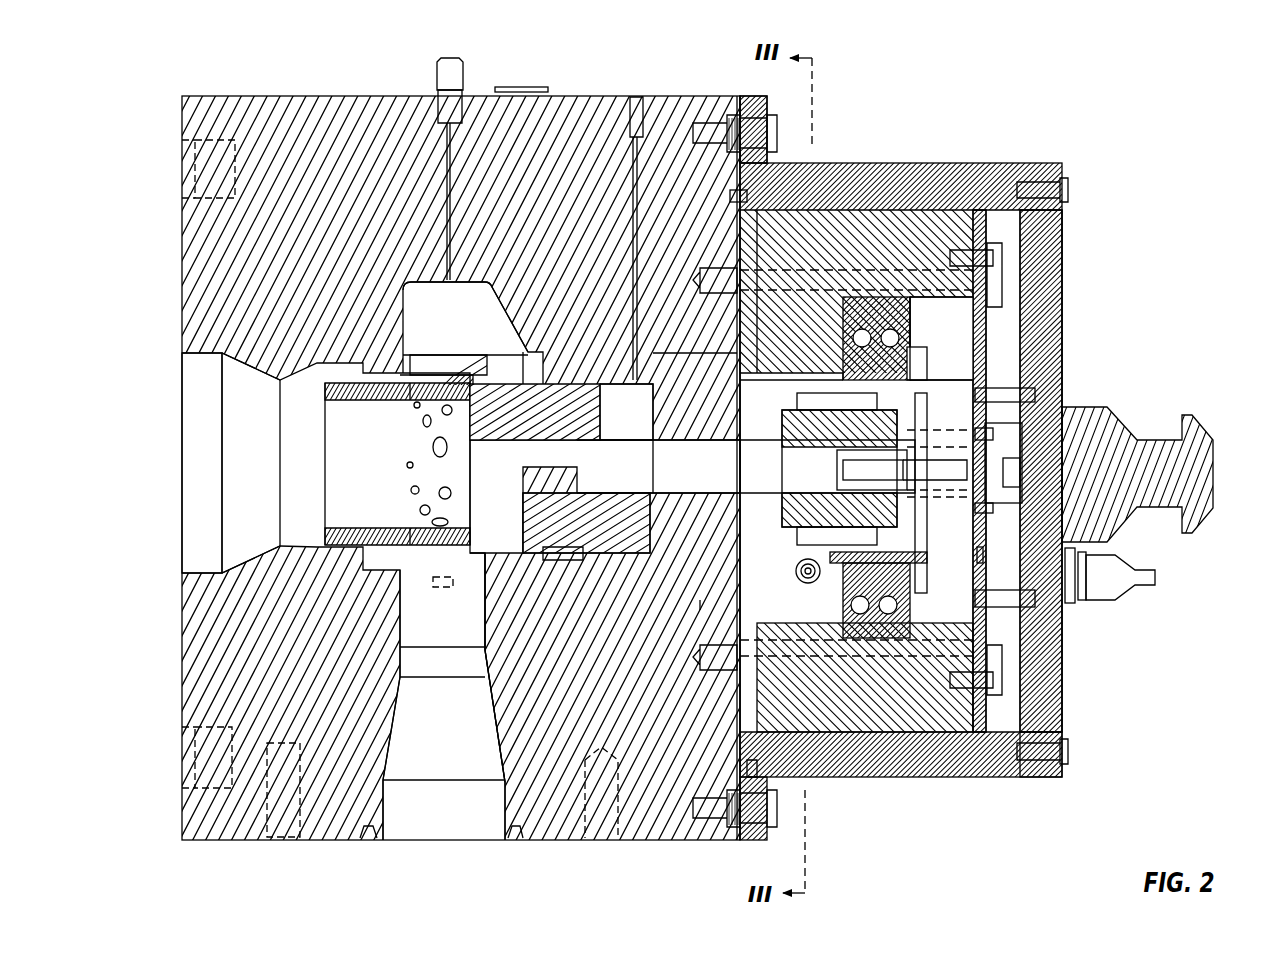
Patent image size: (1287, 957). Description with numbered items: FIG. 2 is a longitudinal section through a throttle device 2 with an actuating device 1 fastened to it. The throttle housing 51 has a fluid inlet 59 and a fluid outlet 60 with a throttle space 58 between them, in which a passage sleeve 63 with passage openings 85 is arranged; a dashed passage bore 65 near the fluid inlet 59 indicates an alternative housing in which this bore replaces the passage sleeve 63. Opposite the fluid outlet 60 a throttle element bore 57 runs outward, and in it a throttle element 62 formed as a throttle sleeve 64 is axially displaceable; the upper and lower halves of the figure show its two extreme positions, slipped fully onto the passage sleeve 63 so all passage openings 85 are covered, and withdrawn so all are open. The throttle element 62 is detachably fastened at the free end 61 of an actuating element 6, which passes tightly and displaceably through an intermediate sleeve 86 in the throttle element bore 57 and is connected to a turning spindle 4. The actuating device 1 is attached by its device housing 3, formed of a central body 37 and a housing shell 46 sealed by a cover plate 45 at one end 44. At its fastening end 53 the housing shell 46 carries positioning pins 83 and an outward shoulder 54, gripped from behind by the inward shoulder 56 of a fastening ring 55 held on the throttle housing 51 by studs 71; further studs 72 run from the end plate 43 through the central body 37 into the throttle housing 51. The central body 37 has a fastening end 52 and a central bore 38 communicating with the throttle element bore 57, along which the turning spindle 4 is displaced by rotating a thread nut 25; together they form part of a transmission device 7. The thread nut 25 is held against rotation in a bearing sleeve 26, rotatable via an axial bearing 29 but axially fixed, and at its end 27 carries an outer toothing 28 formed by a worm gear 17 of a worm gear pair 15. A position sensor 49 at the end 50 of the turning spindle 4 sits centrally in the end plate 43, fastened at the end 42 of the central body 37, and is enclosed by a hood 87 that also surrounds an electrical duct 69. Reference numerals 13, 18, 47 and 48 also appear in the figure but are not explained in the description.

The actuating device 1 is at (1095, 134).
The throttle device 2 is at (528, 87).
The device housing 3 is at (980, 162).
The turning spindle 4 is at (805, 735).
The actuating element 6 is at (610, 453).
The transmission device 7 is at (880, 640).
The injection nozzle 13 is at (1100, 595).
The worm gear pair 15 is at (839, 618).
The worm gear 17 is at (808, 380).
The coupling element 18 is at (835, 650).
The thread nut 25 is at (945, 650).
The bearing sleeve 26 is at (1003, 178).
The end of the thread nut 27 is at (915, 235).
The outer toothing 28 is at (878, 258).
The axial bearing 29 is at (920, 640).
The central body 37 is at (940, 240).
The central bore 38 is at (662, 600).
The end of the central body 42 is at (980, 230).
The end plate 43 is at (1000, 335).
The end of the housing shell 44 is at (1068, 190).
The cover plate 45 is at (1040, 260).
The housing shell 46 is at (867, 182).
The rear plate 47 is at (1068, 740).
The drive connection 48 is at (1192, 428).
The position sensor 49 is at (1030, 440).
The end of the turning spindle 50 is at (975, 650).
The throttle housing 51 is at (288, 100).
The fastening end of the central body 52 is at (733, 247).
The fastening end of the housing shell 53 is at (750, 762).
The shoulder 54 is at (740, 610).
The fastening ring 55 is at (770, 108).
The shoulder of the fastening ring 56 is at (740, 700).
The throttle element bore 57 is at (538, 383).
The throttle space 58 is at (423, 300).
The fluid inlet 59 is at (413, 808).
The fluid outlet 60 is at (200, 478).
The free end of the actuating element 61 is at (558, 600).
The throttle element 62 is at (497, 364).
The passage sleeve 63 is at (343, 423).
The throttle sleeve 64 is at (485, 782).
The passage bore 65 is at (445, 585).
The electrical duct 69 is at (1020, 580).
The studs 71 is at (717, 125).
The studs 72 is at (1000, 305).
The positioning pins 83 is at (733, 195).
The passage openings 85 is at (440, 443).
The intermediate sleeve 86 is at (627, 580).
The hood 87 is at (1035, 548).